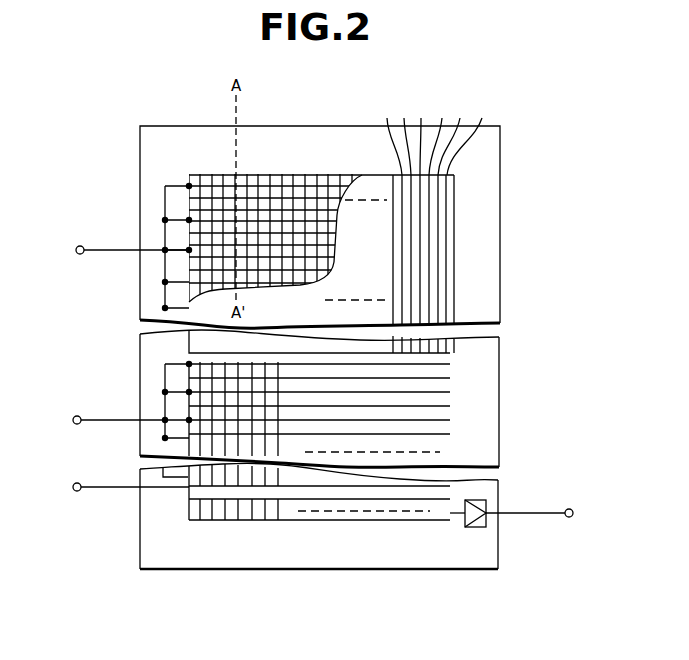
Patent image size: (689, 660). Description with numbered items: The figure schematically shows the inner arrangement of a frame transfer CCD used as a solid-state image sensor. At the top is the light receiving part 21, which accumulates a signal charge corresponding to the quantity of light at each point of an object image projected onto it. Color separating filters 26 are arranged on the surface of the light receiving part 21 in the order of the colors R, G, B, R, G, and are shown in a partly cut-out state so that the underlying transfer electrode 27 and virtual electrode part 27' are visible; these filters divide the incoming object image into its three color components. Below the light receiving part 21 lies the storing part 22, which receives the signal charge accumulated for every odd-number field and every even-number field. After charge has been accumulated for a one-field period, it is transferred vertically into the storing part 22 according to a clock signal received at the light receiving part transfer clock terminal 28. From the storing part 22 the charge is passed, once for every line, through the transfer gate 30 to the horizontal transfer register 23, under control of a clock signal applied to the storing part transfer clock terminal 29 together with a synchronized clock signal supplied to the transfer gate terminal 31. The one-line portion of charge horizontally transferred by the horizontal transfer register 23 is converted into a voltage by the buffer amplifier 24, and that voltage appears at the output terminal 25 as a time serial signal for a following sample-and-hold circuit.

The light receiving part 21 is at (516, 352).
The storing part 22 is at (516, 363).
The horizontal transfer register 23 is at (352, 513).
The buffer amplifier 24 is at (487, 525).
The output terminal 25 is at (573, 513).
The color separating filters 26 is at (455, 197).
The transfer electrode 27 is at (316, 202).
The virtual electrode part 27' is at (143, 247).
The light receiving part transfer clock terminal 28 is at (76, 250).
The storing part transfer clock terminal 29 is at (73, 420).
The transfer gate 30 is at (233, 492).
The transfer gate terminal 31 is at (73, 487).